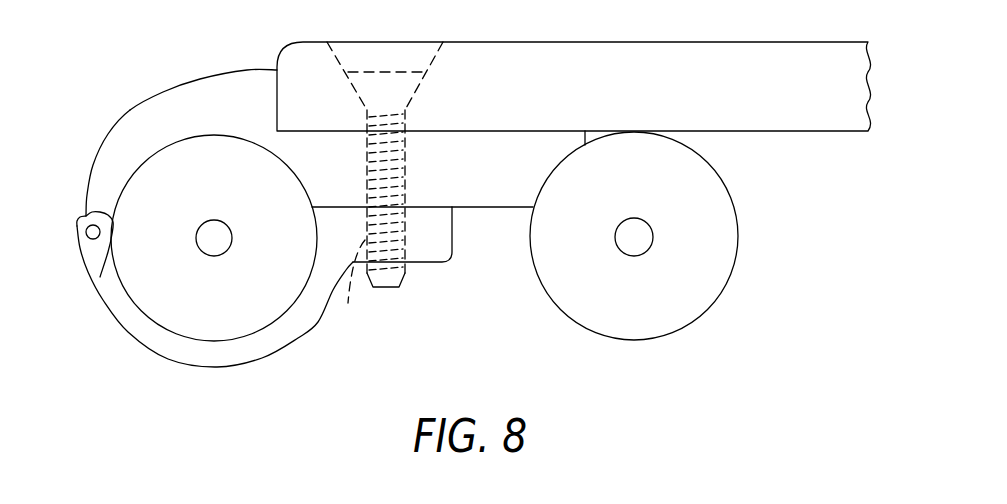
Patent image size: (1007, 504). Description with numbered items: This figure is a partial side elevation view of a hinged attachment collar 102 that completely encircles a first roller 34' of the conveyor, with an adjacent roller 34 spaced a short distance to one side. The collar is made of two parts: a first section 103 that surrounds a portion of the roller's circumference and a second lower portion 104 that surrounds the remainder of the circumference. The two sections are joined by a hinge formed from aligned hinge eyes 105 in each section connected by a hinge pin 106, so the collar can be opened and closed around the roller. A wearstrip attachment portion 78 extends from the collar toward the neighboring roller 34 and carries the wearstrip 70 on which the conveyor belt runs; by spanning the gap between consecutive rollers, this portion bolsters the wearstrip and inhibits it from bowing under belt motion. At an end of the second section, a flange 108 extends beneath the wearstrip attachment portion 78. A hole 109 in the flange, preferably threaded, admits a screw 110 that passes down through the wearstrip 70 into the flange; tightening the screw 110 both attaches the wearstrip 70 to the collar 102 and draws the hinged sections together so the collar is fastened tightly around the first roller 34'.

The wearstrip 70 is at (608, 45).
The hinged attachment collar 102 is at (230, 75).
The first section 103 is at (100, 172).
The second lower portion 104 is at (282, 342).
The hinge eyes 105 is at (87, 232).
The hinge pin 106 is at (100, 262).
The first roller 34' is at (214, 270).
The rollers 34 is at (649, 235).
The wearstrip attachment portion 78 is at (502, 192).
The flange 108 is at (428, 255).
The hole 109 is at (348, 289).
The screw 110 is at (388, 283).